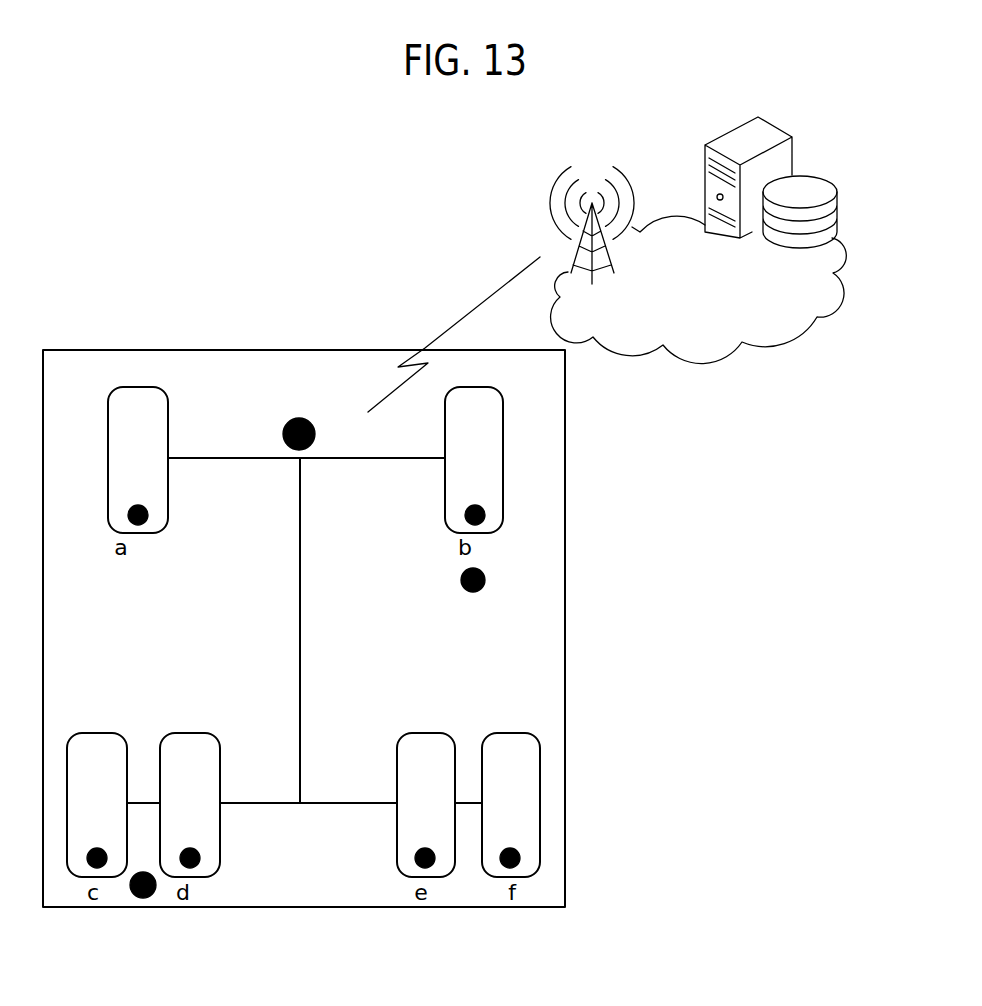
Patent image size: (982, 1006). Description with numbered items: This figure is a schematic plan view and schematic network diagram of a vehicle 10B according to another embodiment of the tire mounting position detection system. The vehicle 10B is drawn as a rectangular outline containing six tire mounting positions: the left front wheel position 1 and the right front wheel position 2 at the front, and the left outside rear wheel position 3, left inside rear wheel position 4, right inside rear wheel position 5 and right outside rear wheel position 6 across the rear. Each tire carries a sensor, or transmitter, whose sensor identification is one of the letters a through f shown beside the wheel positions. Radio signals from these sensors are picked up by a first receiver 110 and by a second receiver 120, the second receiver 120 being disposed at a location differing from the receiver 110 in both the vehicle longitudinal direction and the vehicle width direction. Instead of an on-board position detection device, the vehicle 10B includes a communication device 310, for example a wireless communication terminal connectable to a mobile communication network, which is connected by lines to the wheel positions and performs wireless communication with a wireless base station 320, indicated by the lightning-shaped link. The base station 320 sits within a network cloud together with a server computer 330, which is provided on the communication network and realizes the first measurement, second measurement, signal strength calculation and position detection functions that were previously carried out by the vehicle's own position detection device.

The vehicle 10B is at (565, 587).
The left front wheel position 1 is at (138, 444).
The right front wheel position 2 is at (474, 444).
The left outside rear wheel position 3 is at (97, 790).
The left inside rear wheel position 4 is at (190, 790).
The right inside rear wheel position 5 is at (426, 790).
The right outside rear wheel position 6 is at (511, 790).
The communication device 310 is at (316, 436).
The receiver 110 is at (473, 592).
The receiver 120 is at (141, 898).
The wireless base station 320 is at (613, 257).
The server computer 330 is at (792, 150).